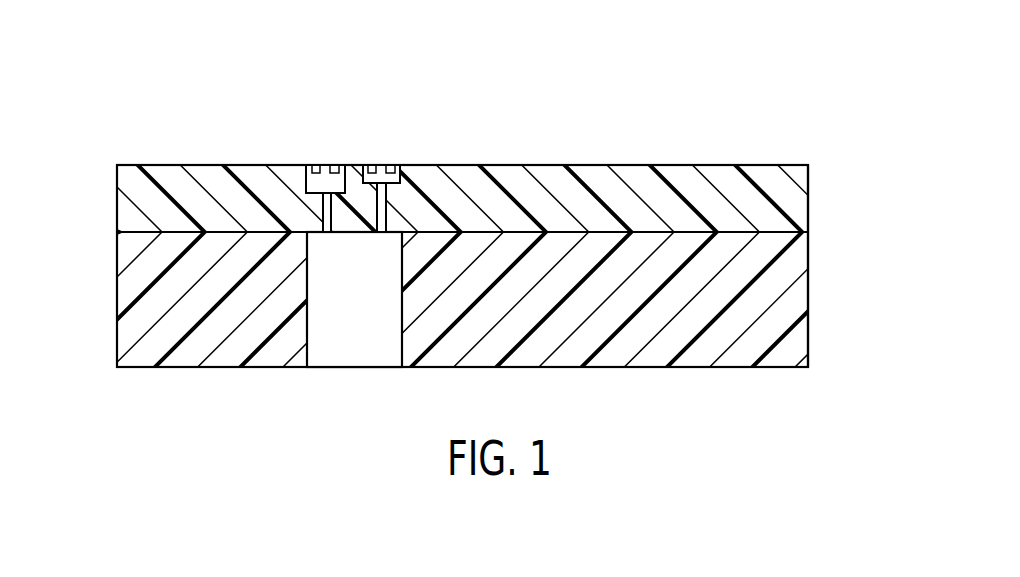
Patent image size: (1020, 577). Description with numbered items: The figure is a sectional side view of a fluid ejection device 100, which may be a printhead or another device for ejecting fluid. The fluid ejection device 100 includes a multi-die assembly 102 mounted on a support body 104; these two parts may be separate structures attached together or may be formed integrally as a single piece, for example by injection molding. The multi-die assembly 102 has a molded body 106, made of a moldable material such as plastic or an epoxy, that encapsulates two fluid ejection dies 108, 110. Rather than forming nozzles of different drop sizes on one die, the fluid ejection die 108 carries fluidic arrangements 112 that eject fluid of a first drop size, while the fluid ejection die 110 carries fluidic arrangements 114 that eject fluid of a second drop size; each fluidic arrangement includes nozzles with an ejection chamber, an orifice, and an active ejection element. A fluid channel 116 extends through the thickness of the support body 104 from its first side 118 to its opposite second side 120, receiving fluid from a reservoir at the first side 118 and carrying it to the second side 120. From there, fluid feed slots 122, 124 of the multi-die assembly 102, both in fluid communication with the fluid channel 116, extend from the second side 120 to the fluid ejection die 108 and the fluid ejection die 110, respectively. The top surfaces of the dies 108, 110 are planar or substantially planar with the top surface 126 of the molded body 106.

The fluid ejection device 100 is at (257, 66).
The multi-die assembly 102 is at (112, 165).
The support body 104 is at (112, 235).
The molded body 106 is at (787, 193).
The fluid ejection die 108 is at (302, 173).
The fluid ejection die 110 is at (412, 172).
The fluidic arrangements 112 is at (335, 163).
The fluidic arrangements 114 is at (393, 163).
The fluid channel 116 is at (333, 338).
The first side 118 is at (569, 368).
The second side 120 is at (697, 232).
The fluid feed slot 122 is at (327, 218).
The fluid feed slot 124 is at (383, 218).
The top surface 126 is at (543, 165).